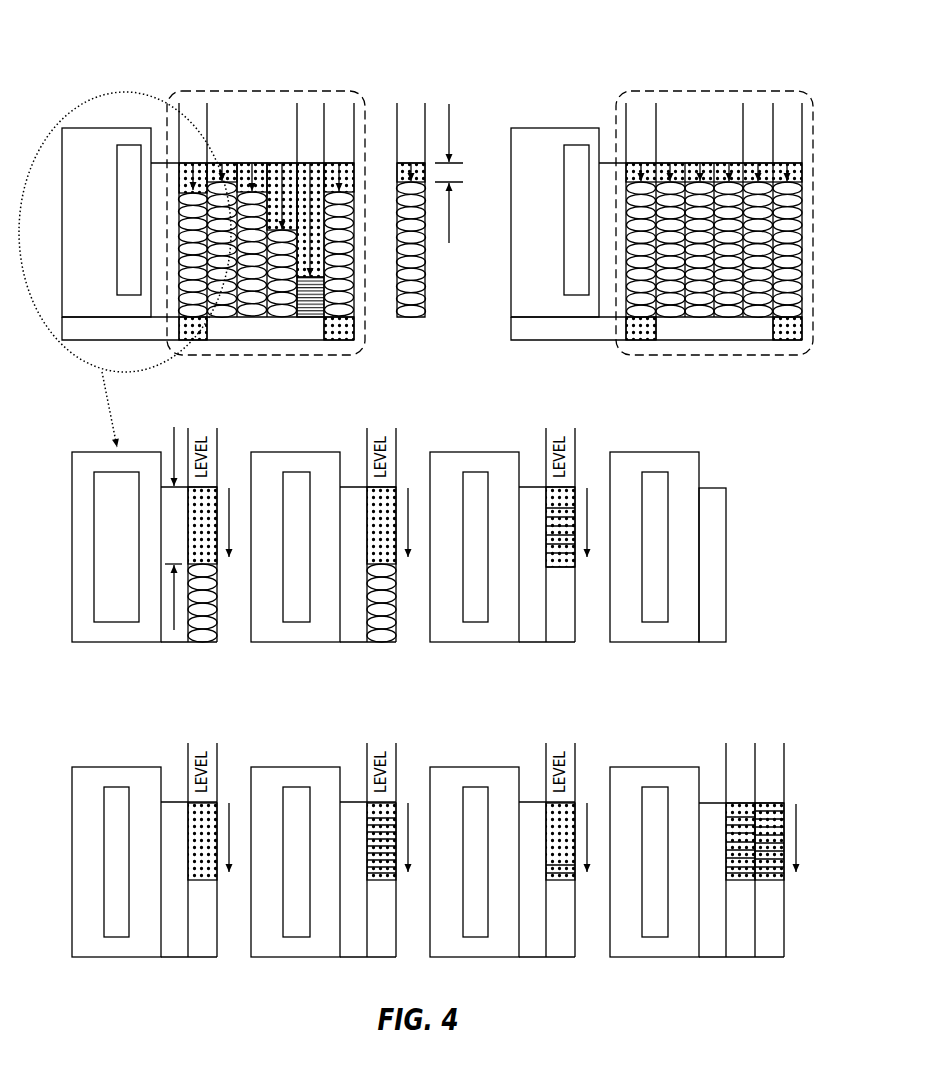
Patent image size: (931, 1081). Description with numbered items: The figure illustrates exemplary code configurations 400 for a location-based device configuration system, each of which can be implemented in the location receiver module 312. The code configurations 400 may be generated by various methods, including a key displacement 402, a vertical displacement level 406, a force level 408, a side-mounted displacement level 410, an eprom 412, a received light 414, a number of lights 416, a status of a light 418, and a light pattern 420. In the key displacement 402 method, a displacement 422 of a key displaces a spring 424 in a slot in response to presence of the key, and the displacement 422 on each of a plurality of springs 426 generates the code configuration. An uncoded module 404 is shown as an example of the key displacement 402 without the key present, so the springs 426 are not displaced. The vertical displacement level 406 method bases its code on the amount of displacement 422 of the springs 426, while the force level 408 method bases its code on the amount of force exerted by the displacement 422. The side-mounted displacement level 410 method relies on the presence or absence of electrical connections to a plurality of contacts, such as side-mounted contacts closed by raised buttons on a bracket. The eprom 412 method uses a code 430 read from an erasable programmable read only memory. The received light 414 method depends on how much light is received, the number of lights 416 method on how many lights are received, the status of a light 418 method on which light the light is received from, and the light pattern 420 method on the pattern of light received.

The code configurations 400 is at (588, 20).
The location receiver module 312 is at (82, 128).
The key displacement 402 is at (130, 145).
The uncoded module 404 is at (578, 145).
The vertical displacement level 406 is at (93, 497).
The force level 408 is at (302, 472).
The side-mounted displacement level 410 is at (481, 472).
The eprom 412 is at (661, 472).
The received light 414 is at (124, 787).
The number of lights 416 is at (303, 787).
The status of a light 418 is at (481, 787).
The light pattern 420 is at (661, 787).
The displacement 422 is at (311, 355).
The spring 424 is at (427, 272).
The springs 426 is at (230, 91).
The code 430 is at (718, 623).